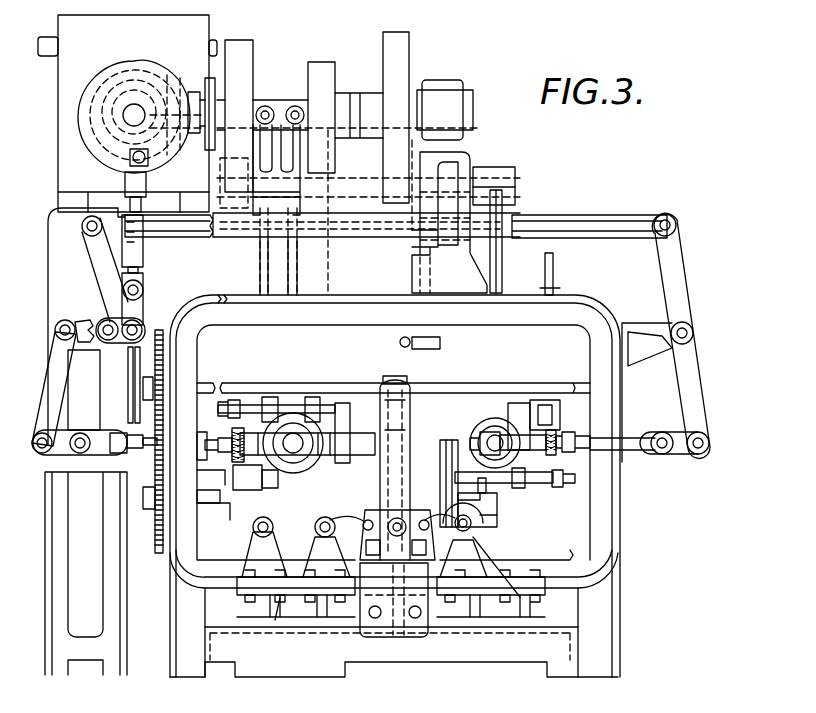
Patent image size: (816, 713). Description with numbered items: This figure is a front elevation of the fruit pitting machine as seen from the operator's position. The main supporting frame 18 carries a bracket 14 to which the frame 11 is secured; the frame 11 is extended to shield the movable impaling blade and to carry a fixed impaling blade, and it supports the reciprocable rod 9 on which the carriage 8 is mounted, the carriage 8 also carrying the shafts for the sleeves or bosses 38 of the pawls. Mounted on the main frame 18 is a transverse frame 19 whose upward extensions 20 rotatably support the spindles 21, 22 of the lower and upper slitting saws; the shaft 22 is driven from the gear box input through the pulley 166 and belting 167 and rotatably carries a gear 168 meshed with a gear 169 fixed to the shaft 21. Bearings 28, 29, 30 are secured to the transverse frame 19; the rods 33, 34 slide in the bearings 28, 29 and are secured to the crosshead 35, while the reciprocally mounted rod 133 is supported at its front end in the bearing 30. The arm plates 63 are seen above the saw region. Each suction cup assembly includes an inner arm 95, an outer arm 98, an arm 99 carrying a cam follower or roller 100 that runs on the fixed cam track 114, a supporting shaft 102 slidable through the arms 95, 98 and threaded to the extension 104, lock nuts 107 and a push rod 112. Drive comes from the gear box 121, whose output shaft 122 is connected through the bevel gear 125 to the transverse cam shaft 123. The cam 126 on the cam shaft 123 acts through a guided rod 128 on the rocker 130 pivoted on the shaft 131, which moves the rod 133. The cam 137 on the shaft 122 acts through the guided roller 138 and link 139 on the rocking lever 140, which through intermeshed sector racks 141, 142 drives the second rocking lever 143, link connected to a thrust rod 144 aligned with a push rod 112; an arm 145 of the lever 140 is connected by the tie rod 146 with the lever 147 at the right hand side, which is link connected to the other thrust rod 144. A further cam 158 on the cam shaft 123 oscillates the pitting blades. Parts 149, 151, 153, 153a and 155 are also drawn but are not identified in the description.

The carriage 8 is at (490, 540).
The reciprocable rod 9 is at (372, 595).
The frame 11 is at (378, 385).
The bracket 14 is at (390, 637).
The main supporting frame 18 is at (325, 652).
The transverse frame 19 is at (255, 606).
The upward extensions 20 is at (190, 352).
The spindle 21 is at (214, 497).
The spindle 22 is at (218, 384).
The bearing 28 is at (475, 545).
The bearing 29 is at (318, 555).
The bearing 30 is at (243, 546).
The rod 33 is at (497, 530).
The rod 34 is at (318, 538).
The crosshead 35 is at (495, 556).
The sleeves or bosses 38 is at (398, 518).
The arm plates 63 is at (318, 468).
The inner arm 95 is at (314, 397).
The outer arm 98 is at (270, 397).
The arm 99 is at (518, 403).
The cam follower 100 is at (545, 400).
The supporting shaft 102 is at (240, 400).
The extension 104 is at (345, 425).
The lock nuts 107 is at (232, 434).
The push rod 112 is at (222, 452).
The fixed cam track 114 is at (560, 408).
The gear box 121 is at (127, 113).
The output shaft 122 is at (128, 118).
The transverse cam shaft 123 is at (362, 100).
The bevel gear 125 is at (183, 90).
The cam 126 is at (248, 72).
The guided rod 128 is at (278, 98).
The rocker lever 130 is at (262, 268).
The shaft 131 is at (354, 185).
The reciprocally mounted rod 133 is at (213, 500).
The cam 137 is at (104, 82).
The guided roller 138 is at (145, 158).
The link 139 is at (143, 290).
The rocking lever 140 is at (98, 295).
The sector rack 141 is at (90, 350).
The sector rack 142 is at (80, 325).
The second rocking lever 143 is at (50, 386).
The thrust rod 144 is at (148, 448).
The arm 145 is at (96, 268).
The tie rod 146 is at (196, 238).
The lever 147 is at (690, 294).
The plate 149 is at (321, 62).
The roller 151 is at (300, 108).
The block 153 is at (300, 147).
The rod 153a is at (296, 272).
The column 155 is at (502, 258).
The cam 158 is at (409, 50).
The pulley 166 is at (135, 408).
The belting 167 is at (130, 375).
The gear 168 is at (165, 343).
The gear 169 is at (157, 540).